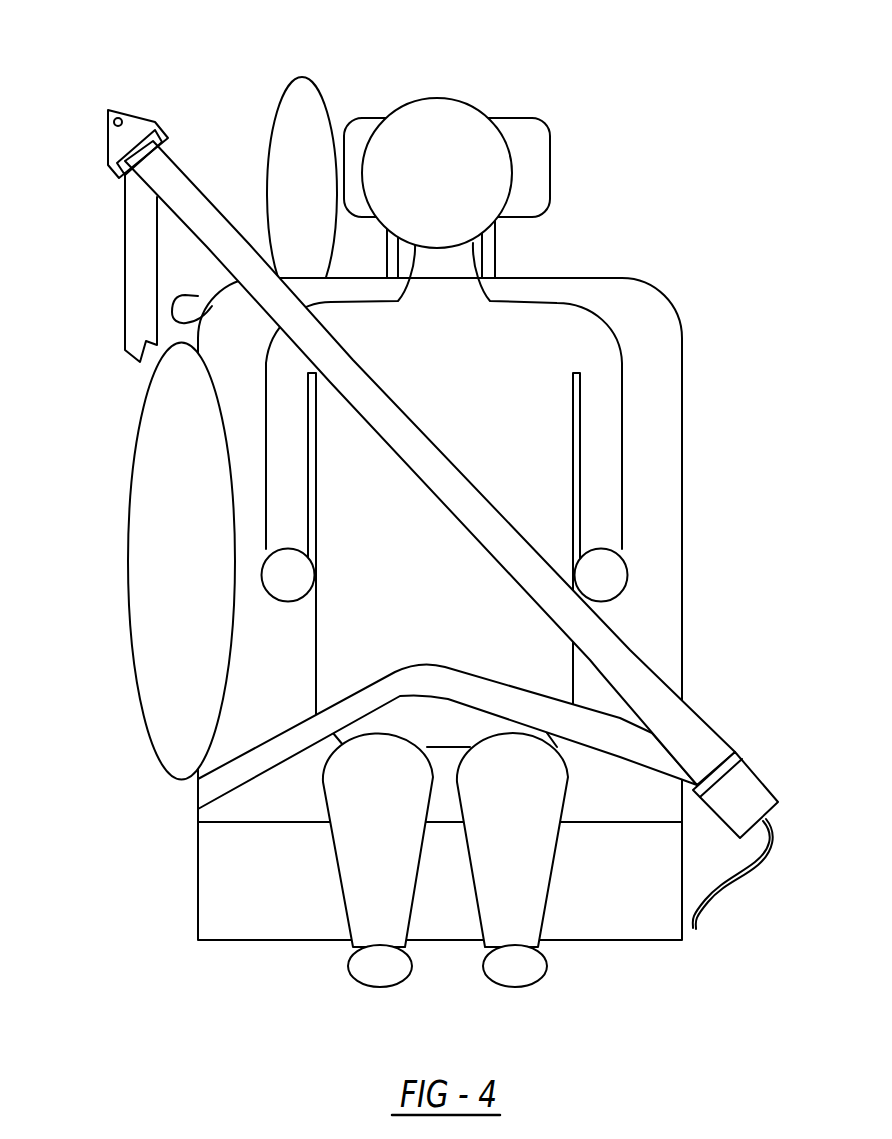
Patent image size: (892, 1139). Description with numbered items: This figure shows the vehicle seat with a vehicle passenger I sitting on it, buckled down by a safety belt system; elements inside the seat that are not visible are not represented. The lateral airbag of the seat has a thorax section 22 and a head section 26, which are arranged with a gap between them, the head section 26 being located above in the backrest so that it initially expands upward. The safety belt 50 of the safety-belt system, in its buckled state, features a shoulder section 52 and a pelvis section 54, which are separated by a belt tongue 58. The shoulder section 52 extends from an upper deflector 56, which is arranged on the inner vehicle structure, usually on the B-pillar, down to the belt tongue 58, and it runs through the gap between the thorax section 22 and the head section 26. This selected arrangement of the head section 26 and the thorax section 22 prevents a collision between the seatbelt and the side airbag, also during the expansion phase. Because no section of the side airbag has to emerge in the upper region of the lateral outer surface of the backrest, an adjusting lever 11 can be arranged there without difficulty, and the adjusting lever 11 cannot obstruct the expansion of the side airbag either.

The adjusting lever 11 is at (188, 296).
The thorax section 22 is at (163, 507).
The head section 26 is at (300, 105).
The safety belt 50 is at (135, 285).
The shoulder section 52 is at (465, 505).
The pelvis section 54 is at (502, 697).
The upper deflector 56 is at (133, 120).
The belt tongue 58 is at (737, 757).
The vehicle passenger I is at (495, 383).